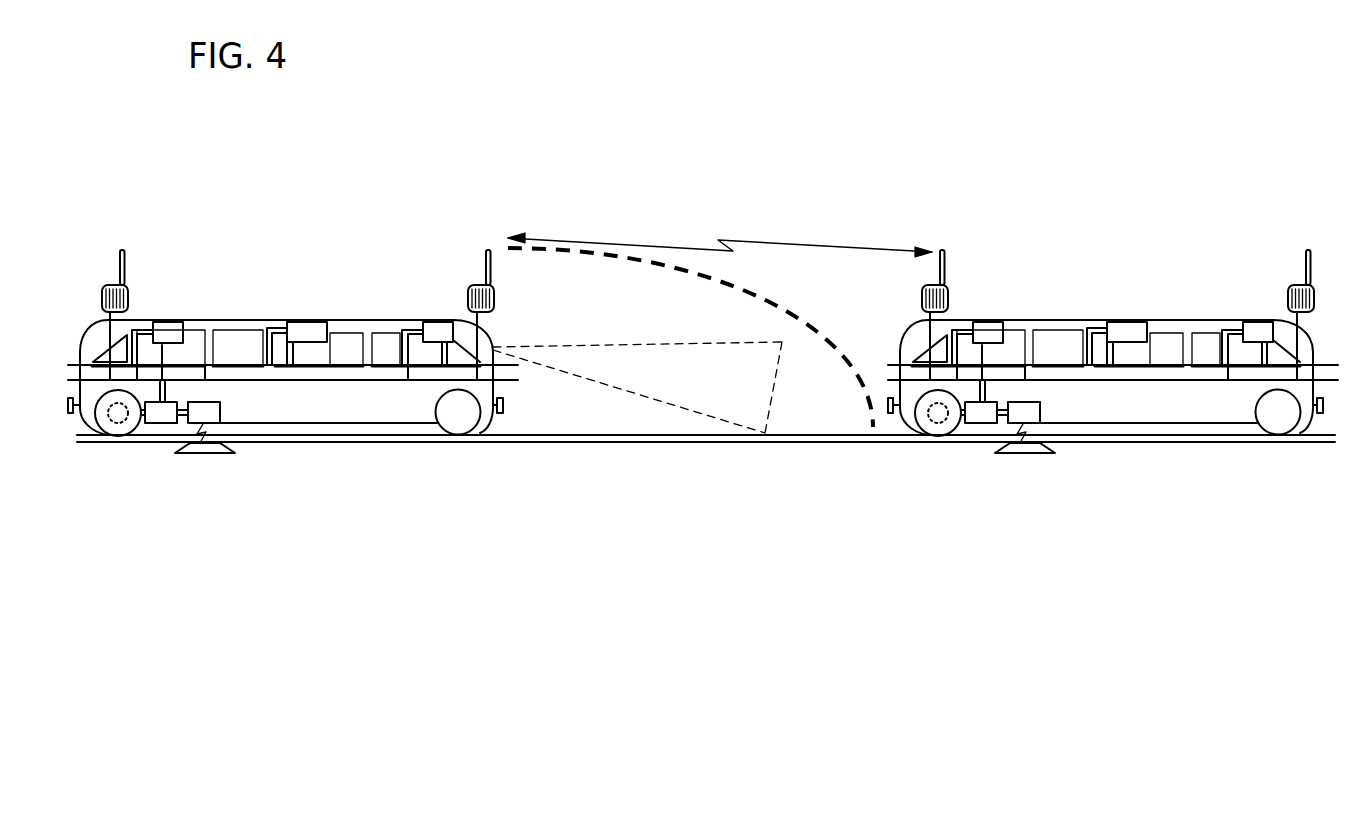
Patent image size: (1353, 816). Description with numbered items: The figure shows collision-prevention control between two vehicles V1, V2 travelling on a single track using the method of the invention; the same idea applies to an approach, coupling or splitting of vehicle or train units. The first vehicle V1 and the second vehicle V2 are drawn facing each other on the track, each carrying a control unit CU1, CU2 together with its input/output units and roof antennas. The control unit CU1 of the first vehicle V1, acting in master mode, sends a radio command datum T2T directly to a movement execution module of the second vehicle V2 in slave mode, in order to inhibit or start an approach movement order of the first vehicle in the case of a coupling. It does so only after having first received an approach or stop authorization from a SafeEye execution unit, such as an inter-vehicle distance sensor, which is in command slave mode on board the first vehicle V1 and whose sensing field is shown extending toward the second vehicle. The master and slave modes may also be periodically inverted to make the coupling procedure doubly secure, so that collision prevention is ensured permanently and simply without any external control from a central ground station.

The first vehicle V1 is at (357, 322).
The control unit of the first vehicle CU1 is at (308, 326).
The second vehicle V2 is at (1192, 322).
The control unit of second vehicle CU2 is at (1128, 326).
The radio command datum T2T is at (773, 238).
The SafeEye execution unit SafeEye is at (637, 387).